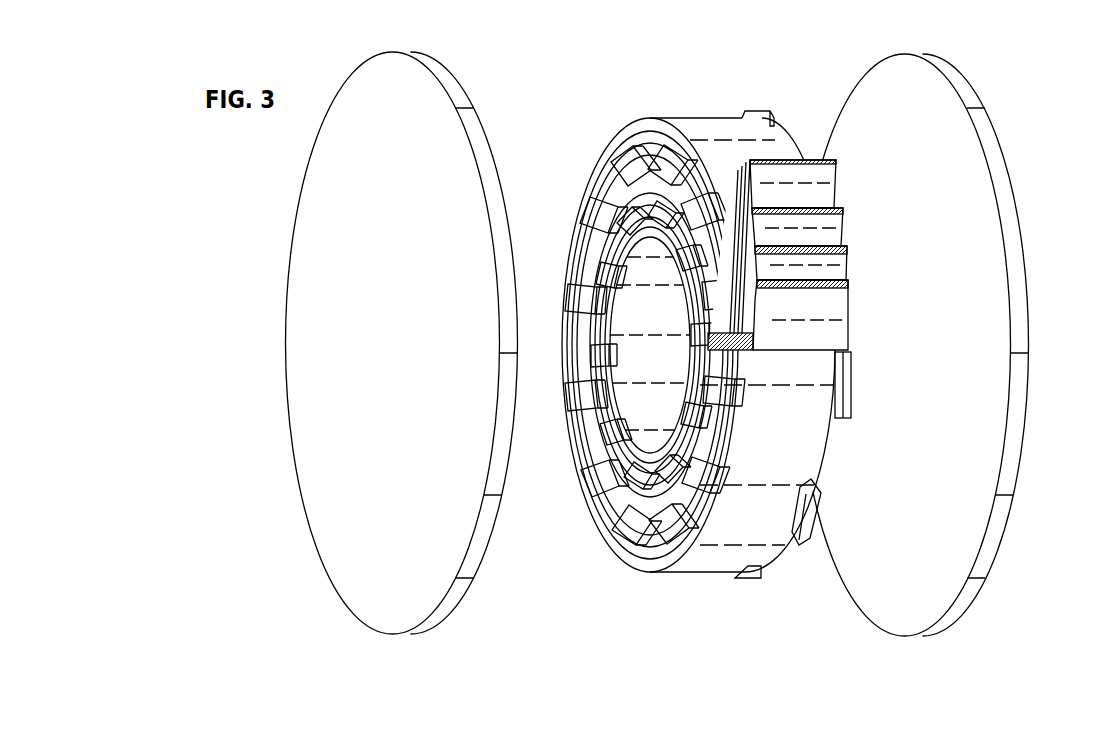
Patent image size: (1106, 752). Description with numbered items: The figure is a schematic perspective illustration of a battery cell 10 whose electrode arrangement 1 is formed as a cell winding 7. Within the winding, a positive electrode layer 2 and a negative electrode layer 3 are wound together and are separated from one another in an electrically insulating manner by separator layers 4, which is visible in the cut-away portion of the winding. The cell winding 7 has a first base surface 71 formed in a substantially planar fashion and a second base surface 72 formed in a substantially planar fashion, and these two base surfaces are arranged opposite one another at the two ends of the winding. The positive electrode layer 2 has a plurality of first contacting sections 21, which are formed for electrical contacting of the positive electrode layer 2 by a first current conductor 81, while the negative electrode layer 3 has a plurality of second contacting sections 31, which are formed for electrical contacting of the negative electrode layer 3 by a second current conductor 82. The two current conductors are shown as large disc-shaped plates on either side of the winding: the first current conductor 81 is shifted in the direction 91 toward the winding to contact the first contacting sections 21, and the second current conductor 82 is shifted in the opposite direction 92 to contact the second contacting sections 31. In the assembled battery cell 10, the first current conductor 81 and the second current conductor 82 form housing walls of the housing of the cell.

The electrode arrangement 1 is at (580, 580).
The positive electrode layer 2 is at (824, 300).
The negative electrode layer 3 is at (822, 222).
The separator layer 4 is at (820, 172).
The cell winding 7 is at (696, 101).
The battery cell 10 is at (1040, 96).
The first contacting sections 21 is at (598, 160).
The second contacting sections 31 is at (852, 398).
The first base surface 71 is at (584, 462).
The second base surface 72 is at (853, 372).
The first current conductor 81 is at (328, 412).
The second current conductor 82 is at (877, 90).
The direction 91 is at (237, 326).
The direction 92 is at (1060, 326).